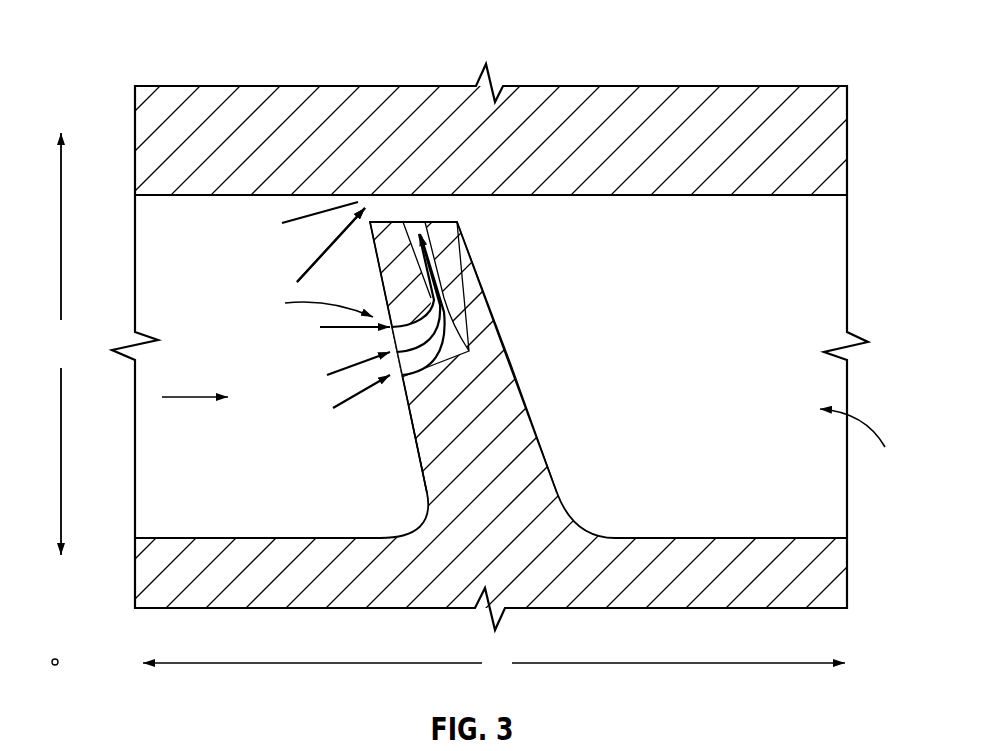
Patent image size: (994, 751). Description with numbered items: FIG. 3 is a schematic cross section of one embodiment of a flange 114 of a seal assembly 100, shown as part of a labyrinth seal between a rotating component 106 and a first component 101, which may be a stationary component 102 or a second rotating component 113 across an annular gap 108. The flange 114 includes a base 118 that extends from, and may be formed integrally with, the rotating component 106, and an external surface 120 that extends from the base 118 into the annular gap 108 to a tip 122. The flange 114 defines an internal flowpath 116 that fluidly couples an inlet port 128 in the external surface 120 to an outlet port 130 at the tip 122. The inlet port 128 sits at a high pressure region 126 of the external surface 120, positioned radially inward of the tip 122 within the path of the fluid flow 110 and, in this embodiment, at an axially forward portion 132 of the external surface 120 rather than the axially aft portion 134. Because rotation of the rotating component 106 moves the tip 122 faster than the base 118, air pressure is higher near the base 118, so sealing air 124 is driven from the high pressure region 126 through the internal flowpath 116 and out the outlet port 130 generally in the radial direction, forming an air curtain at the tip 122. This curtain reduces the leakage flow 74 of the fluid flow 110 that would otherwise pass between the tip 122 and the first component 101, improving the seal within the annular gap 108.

The seal assembly 100 is at (85, 92).
The first component 101 is at (282, 100).
The stationary component 102 is at (491, 223).
The second rotating component 113 is at (623, 196).
The rotating component 106 is at (665, 538).
The annular gap 108 is at (859, 443).
The fluid flow 110 is at (195, 397).
The flange 114 is at (524, 400).
The internal flowpath 116 is at (457, 318).
The base 118 is at (557, 493).
The external surface 120 is at (543, 450).
The tip 122 is at (445, 210).
The sealing air 124 is at (347, 397).
The high pressure region 126 is at (238, 454).
The inlet port 128 is at (309, 305).
The outlet port 130 is at (403, 210).
The axially forward portion 132 is at (413, 427).
The axially aft portion 134 is at (511, 362).
The leakage flow 74 is at (316, 263).